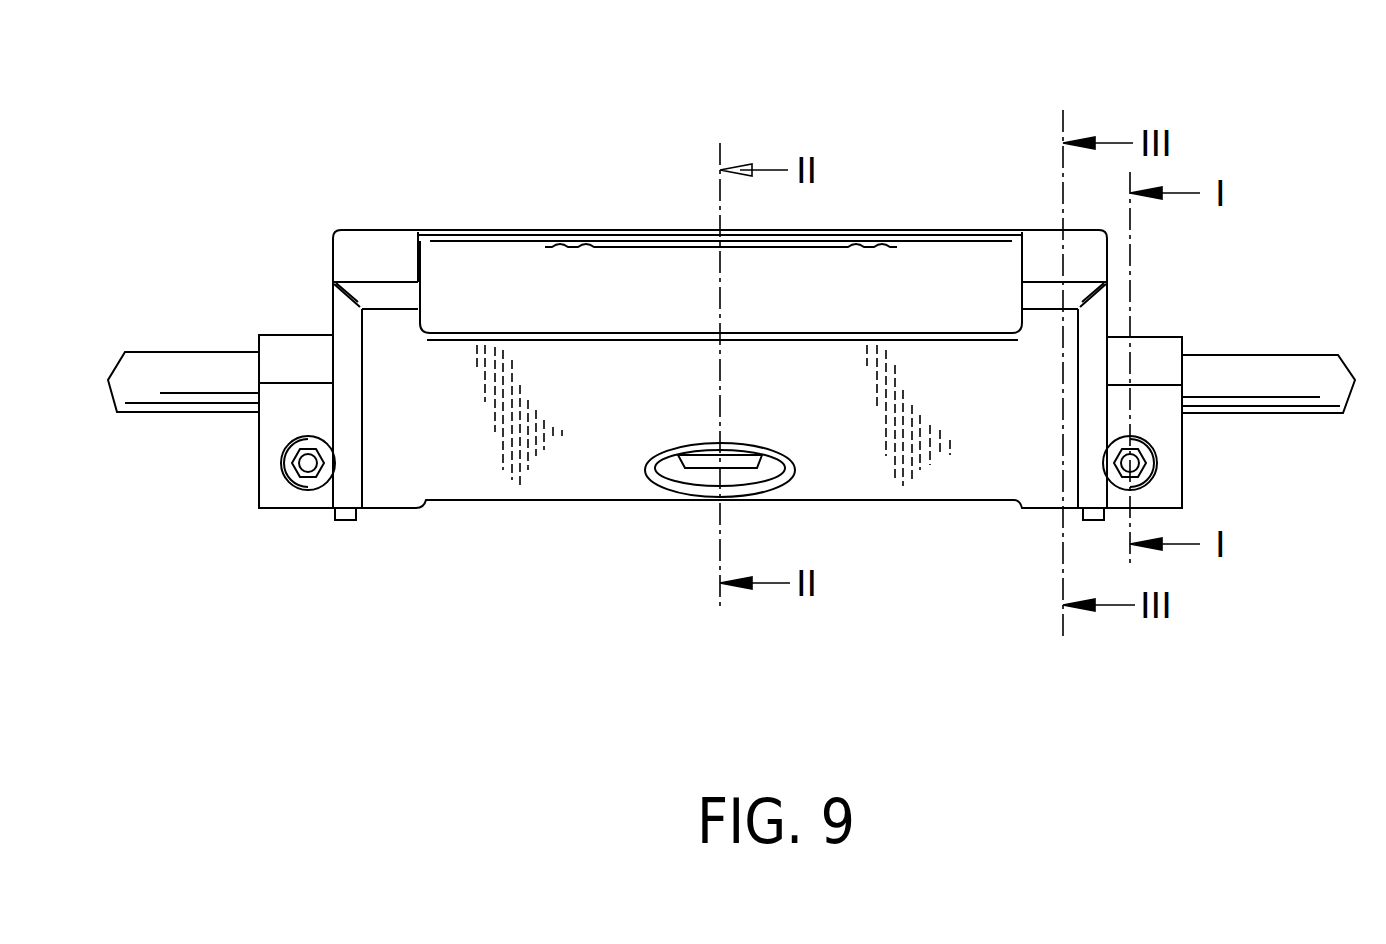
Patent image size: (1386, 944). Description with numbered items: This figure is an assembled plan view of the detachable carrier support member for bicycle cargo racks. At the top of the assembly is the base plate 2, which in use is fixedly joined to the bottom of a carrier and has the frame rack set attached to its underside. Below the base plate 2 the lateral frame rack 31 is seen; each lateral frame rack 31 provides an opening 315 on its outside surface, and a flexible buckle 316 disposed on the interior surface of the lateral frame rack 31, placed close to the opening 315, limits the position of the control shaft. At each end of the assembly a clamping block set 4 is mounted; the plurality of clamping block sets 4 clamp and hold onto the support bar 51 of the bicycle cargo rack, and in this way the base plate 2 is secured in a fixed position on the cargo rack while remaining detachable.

The base plate 2 is at (524, 230).
The lateral frame rack 31 is at (518, 480).
The opening 315 is at (708, 483).
The flexible buckle 316 is at (700, 462).
The clamping block set 4 is at (273, 480).
The support bar 51 is at (1285, 367).